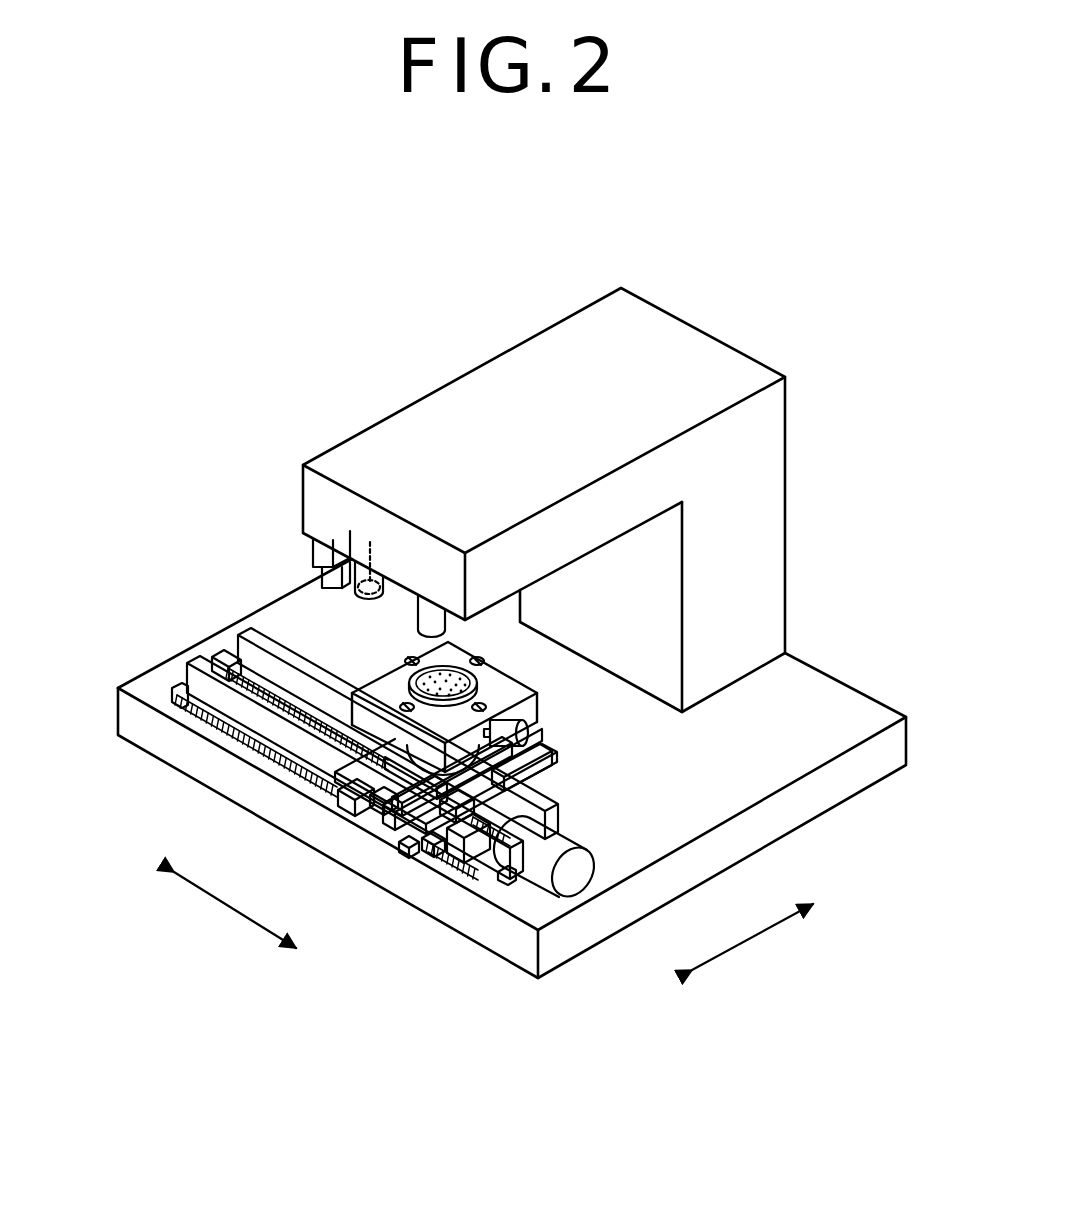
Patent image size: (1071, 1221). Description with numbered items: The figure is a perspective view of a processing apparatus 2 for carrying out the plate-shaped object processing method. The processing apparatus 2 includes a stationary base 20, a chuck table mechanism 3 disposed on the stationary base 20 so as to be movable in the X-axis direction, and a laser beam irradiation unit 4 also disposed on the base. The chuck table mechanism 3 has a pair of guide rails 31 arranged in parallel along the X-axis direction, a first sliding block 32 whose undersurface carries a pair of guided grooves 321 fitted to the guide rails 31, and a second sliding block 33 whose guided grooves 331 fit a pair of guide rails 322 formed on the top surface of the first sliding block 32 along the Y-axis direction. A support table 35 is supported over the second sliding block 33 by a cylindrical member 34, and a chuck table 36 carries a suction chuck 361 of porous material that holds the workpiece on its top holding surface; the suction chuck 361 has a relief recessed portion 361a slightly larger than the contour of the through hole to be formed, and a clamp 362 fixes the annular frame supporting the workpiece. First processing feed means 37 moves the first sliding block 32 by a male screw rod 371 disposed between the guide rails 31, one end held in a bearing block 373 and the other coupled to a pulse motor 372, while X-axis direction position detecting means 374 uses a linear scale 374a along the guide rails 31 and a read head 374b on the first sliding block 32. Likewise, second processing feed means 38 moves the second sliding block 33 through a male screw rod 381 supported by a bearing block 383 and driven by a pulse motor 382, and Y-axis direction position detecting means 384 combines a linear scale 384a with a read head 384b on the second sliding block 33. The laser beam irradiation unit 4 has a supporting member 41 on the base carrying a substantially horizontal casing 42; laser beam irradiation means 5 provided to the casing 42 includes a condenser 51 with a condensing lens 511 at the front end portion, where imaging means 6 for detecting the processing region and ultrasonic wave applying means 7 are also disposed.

The processing apparatus 2 is at (754, 314).
The stationary base 20 is at (854, 679).
The chuck table mechanism 3 is at (656, 807).
The guide rails 31 is at (230, 645).
The first sliding block 32 is at (392, 842).
The second sliding block 33 is at (547, 783).
The cylindrical member 34 is at (467, 762).
The support table 35 is at (537, 688).
The chuck table 36 is at (399, 689).
The suction chuck 361 is at (492, 684).
The relief recessed portion 361a is at (432, 673).
The clamp 362 is at (409, 660).
The guided grooves 321 is at (430, 876).
The guide rails 322 is at (395, 820).
The guided grooves 331 is at (305, 762).
The first processing feed means 37 is at (501, 874).
The male screw rod 371 is at (325, 797).
The pulse motor 372 is at (592, 872).
The bearing block 373 is at (212, 655).
The X-axis direction position detecting means 374 is at (455, 882).
The linear scale 374a is at (173, 699).
The read head 374b is at (436, 860).
The second processing feed means 38 is at (553, 760).
The male screw rod 381 is at (380, 830).
The pulse motor 382 is at (550, 743).
The bearing block 383 is at (420, 848).
The Y-axis direction position detecting means 384 is at (578, 882).
The linear scale 384a is at (506, 884).
The read head 384b is at (556, 776).
The laser beam irradiation unit 4 is at (393, 341).
The supporting member 41 is at (790, 528).
The casing 42 is at (509, 345).
The laser beam irradiation means 5 is at (329, 600).
The condenser 51 is at (355, 598).
The condensing lens 511 is at (367, 554).
The imaging means 6 is at (416, 605).
The ultrasonic wave applying means 7 is at (309, 553).